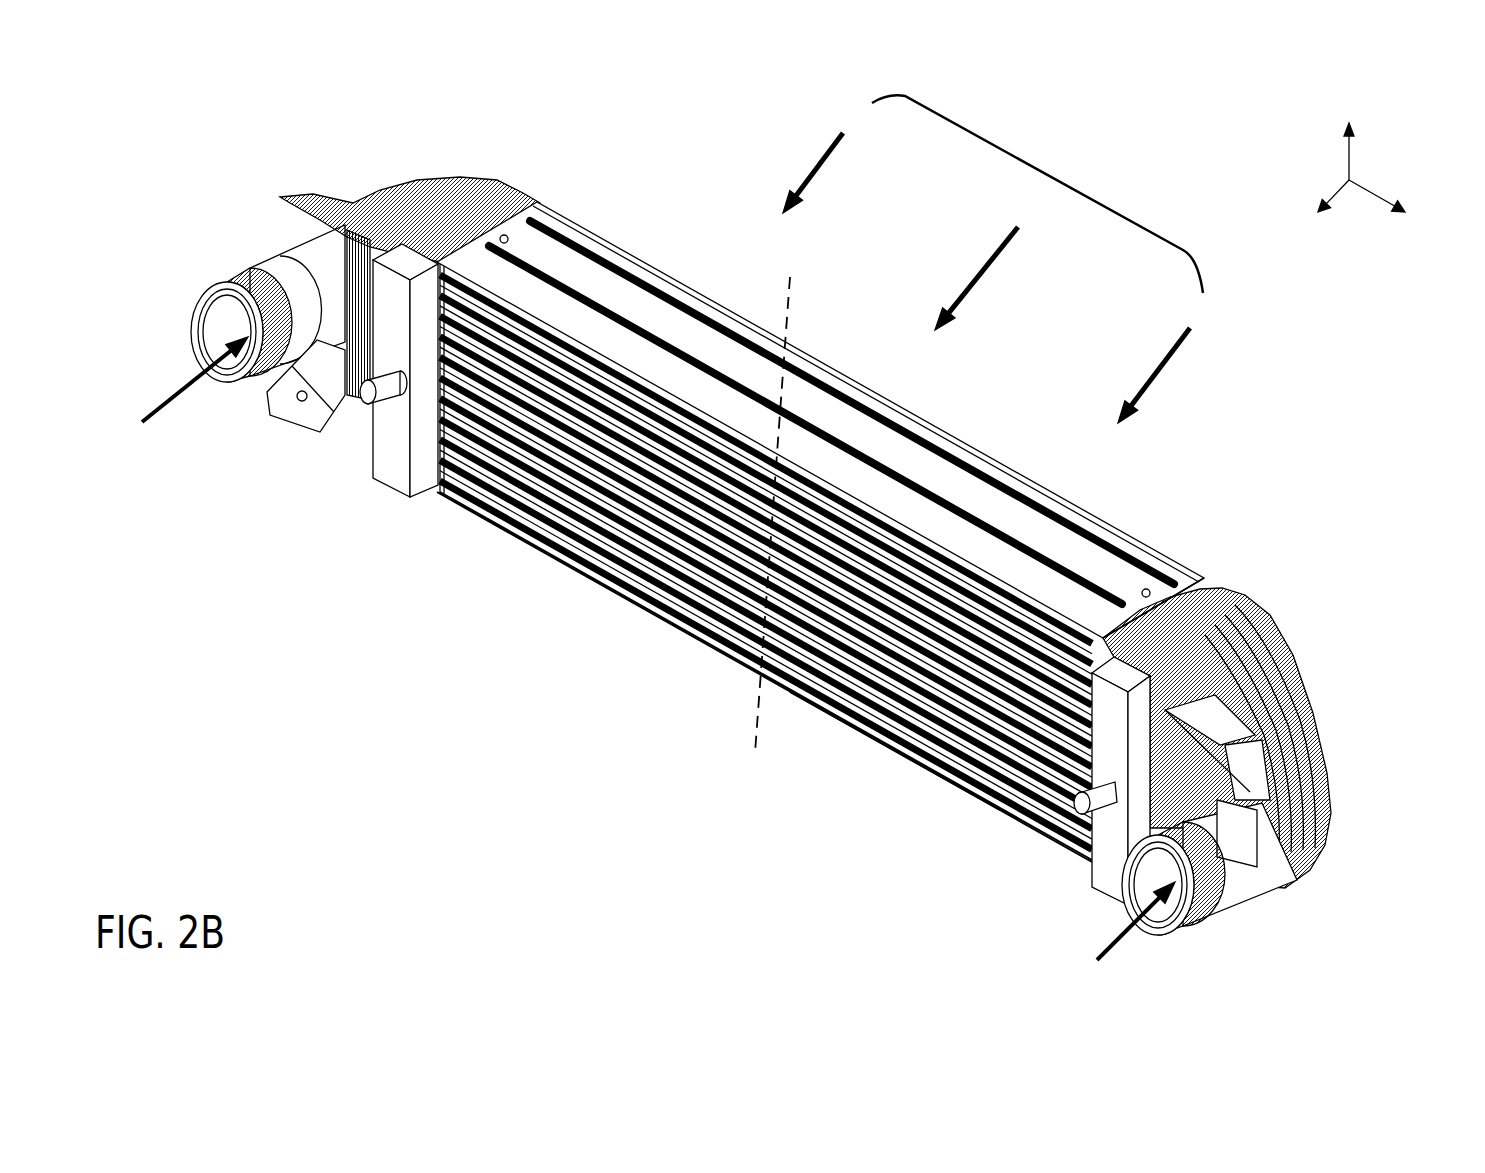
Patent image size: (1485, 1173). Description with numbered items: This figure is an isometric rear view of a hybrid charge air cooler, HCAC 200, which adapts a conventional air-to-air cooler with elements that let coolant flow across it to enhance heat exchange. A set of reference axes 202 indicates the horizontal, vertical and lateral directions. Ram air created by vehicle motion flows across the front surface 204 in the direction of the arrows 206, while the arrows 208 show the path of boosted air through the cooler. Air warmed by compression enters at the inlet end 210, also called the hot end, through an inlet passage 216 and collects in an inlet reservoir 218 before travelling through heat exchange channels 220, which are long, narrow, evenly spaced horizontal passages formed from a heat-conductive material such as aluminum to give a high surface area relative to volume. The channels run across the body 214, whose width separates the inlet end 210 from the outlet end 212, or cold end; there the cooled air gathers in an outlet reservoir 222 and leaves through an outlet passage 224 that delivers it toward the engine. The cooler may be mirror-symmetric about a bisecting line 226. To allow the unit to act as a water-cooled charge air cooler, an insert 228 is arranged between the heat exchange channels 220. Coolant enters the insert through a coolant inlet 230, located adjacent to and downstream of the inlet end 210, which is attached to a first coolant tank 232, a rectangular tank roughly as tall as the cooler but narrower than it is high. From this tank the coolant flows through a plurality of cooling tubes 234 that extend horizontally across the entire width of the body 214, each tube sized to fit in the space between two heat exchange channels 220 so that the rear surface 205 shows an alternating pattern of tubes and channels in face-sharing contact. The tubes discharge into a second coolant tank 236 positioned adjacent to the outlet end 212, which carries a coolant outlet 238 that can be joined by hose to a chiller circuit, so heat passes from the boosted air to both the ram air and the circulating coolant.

The HCAC 200 is at (229, 134).
The reference axes 202 is at (1398, 104).
The front surface 204 is at (1179, 546).
The rear surface 205 is at (501, 637).
The arrows 206 is at (1050, 173).
The arrows 208 is at (173, 400).
The inlet end 210 is at (352, 134).
The outlet end 212 is at (1296, 555).
The body 214 is at (655, 151).
The inlet passage 216 is at (218, 327).
The inlet reservoir 218 is at (445, 195).
The heat exchange channels 220 is at (1020, 747).
The outlet reservoir 222 is at (1222, 625).
The outlet passage 224 is at (1172, 903).
The bisecting line 226 is at (790, 293).
The insert 228 is at (827, 779).
The coolant inlet 230 is at (392, 368).
The first coolant tank 232 is at (402, 389).
The cooling tubes 234 is at (543, 463).
The second coolant tank 236 is at (1077, 781).
The coolant outlet 238 is at (1113, 788).